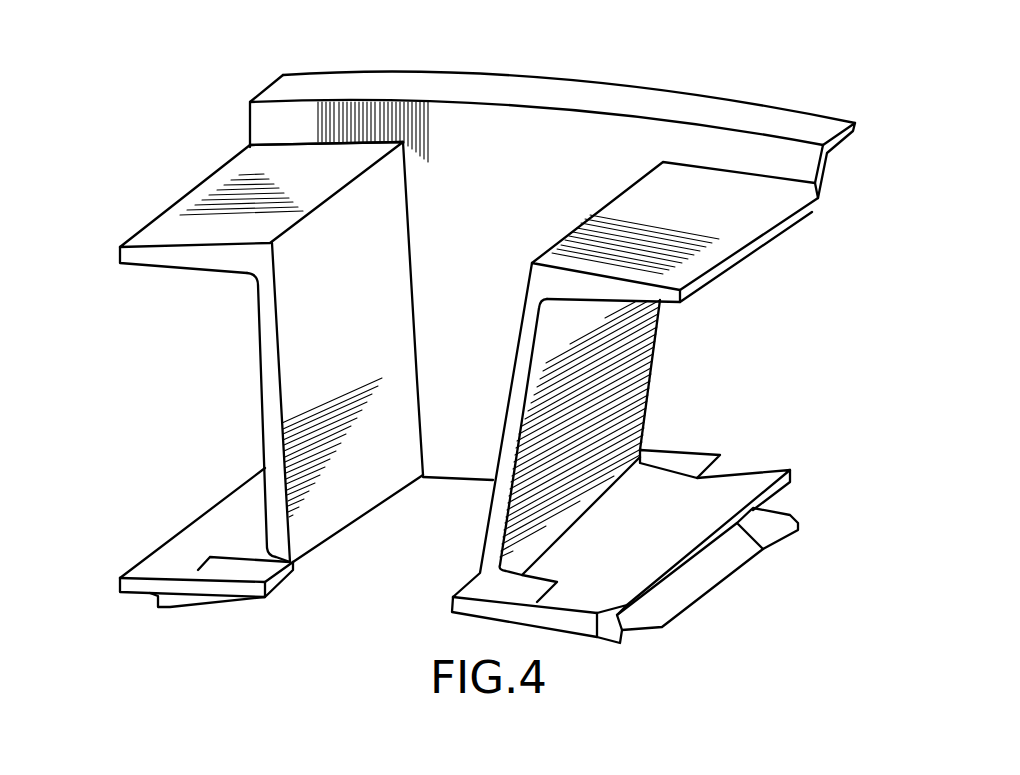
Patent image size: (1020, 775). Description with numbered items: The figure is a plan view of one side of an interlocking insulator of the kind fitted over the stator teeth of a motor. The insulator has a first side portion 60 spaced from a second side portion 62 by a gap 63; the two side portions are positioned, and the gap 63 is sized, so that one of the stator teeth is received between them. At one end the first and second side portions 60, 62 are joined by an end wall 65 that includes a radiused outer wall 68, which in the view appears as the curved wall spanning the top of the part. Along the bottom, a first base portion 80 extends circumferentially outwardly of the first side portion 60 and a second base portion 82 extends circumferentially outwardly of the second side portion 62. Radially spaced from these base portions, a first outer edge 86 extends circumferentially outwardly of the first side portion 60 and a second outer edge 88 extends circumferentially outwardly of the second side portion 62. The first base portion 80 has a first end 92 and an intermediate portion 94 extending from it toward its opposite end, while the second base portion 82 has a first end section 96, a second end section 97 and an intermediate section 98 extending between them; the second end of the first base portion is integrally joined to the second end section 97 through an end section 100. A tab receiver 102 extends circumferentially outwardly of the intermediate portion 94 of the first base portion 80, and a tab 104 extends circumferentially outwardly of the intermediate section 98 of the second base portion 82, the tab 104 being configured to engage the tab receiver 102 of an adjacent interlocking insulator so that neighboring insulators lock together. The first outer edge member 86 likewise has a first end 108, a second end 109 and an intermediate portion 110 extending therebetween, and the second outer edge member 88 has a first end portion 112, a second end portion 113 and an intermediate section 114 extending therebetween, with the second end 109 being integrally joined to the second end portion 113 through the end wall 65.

The first side portion 60 is at (252, 379).
The second side portion 62 is at (580, 388).
The gap 63 is at (405, 555).
The end wall 65 is at (512, 215).
The radiused outer wall 68 is at (588, 92).
The first base portion 80 is at (230, 495).
The second base portion 82 is at (650, 523).
The first outer edge 86 is at (182, 258).
The second outer edge 88 is at (634, 298).
The first end 92 is at (180, 572).
The intermediate portion 94 is at (215, 532).
The first end section 96 is at (587, 593).
The second end section 97 is at (758, 470).
The intermediate section 98 is at (627, 550).
The end section 100 is at (672, 460).
The tab receiver 102 is at (153, 600).
The tab 104 is at (735, 541).
The first end 108 is at (143, 238).
The second end 109 is at (300, 150).
The intermediate portion 110 is at (235, 192).
The first end portion 112 is at (592, 268).
The second end portion 113 is at (732, 183).
The intermediate section 114 is at (688, 217).